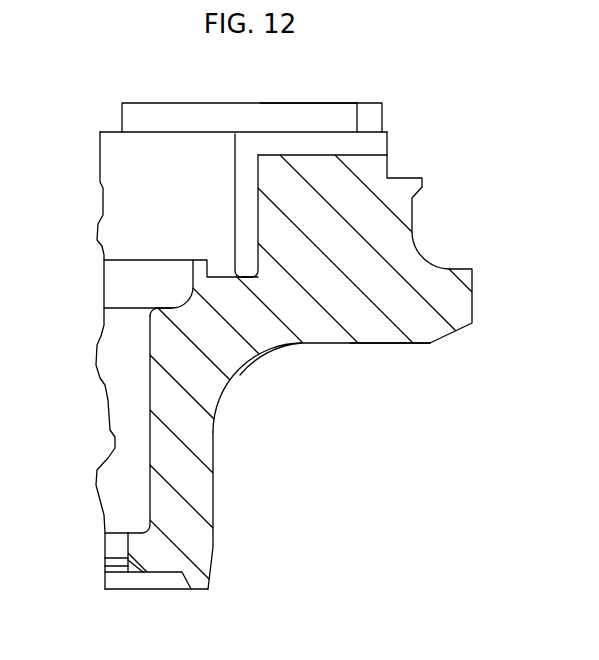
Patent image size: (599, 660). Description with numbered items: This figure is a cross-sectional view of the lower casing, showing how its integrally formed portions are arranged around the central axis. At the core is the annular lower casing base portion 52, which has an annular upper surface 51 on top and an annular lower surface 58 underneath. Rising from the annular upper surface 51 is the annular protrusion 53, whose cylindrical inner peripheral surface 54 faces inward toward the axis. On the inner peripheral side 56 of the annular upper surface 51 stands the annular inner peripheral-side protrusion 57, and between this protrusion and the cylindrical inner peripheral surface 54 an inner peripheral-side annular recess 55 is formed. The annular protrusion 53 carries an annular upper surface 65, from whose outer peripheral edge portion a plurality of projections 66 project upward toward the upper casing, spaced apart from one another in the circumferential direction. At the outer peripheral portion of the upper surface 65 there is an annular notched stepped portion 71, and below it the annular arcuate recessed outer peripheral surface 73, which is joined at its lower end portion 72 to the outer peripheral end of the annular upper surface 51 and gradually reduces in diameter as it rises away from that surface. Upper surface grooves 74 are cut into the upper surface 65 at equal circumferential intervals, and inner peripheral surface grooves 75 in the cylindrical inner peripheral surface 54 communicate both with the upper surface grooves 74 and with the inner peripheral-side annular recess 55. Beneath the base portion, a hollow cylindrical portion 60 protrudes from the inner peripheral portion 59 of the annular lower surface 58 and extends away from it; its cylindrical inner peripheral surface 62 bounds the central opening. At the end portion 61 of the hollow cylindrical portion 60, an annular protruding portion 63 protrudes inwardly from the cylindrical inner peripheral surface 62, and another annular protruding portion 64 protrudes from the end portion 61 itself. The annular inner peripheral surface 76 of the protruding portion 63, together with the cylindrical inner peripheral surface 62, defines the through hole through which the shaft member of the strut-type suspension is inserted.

The annular upper surface 51 is at (456, 260).
The lower casing base portion 52 is at (336, 323).
The annular protrusion 53 is at (337, 207).
The cylindrical inner peripheral surface 54 is at (115, 167).
The inner peripheral-side annular recess 55 is at (223, 257).
The inner peripheral side 56 is at (171, 304).
The annular inner peripheral-side protrusion 57 is at (198, 271).
The annular lower surface 58 is at (373, 343).
The inner peripheral portion 59 is at (290, 344).
The hollow cylindrical portion 60 is at (187, 480).
The end portion 61 is at (178, 540).
The cylindrical inner peripheral surface 62 is at (150, 477).
The annular protruding portion 63 is at (138, 558).
The annular protruding portion 64 is at (195, 580).
The annular upper surface 65 is at (286, 130).
The projections 66 is at (146, 118).
The annular notched stepped portion 71 is at (396, 170).
The lower end portion 72 is at (427, 256).
The annular arcuate recessed outer peripheral surface 73 is at (413, 232).
The upper surface grooves 74 is at (337, 155).
The inner peripheral surface grooves 75 is at (248, 230).
The annular inner peripheral surface 76 is at (106, 569).